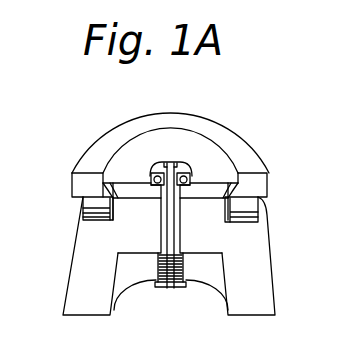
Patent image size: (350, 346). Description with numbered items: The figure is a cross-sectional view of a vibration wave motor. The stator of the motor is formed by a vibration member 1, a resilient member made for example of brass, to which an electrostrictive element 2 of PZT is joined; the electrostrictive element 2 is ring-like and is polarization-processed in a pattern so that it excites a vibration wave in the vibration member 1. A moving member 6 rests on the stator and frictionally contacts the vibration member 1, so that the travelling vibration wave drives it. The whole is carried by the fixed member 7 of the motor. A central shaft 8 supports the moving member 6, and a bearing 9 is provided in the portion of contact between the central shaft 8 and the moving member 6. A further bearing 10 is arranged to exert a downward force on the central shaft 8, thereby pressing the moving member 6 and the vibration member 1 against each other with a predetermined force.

The vibration member 1 is at (84, 205).
The electrostrictive element 2 is at (79, 205).
The moving member 6 is at (86, 161).
The fixed member 7 is at (262, 270).
The central shaft 8 is at (174, 161).
The bearing 9 is at (190, 173).
The bearing 10 is at (188, 270).